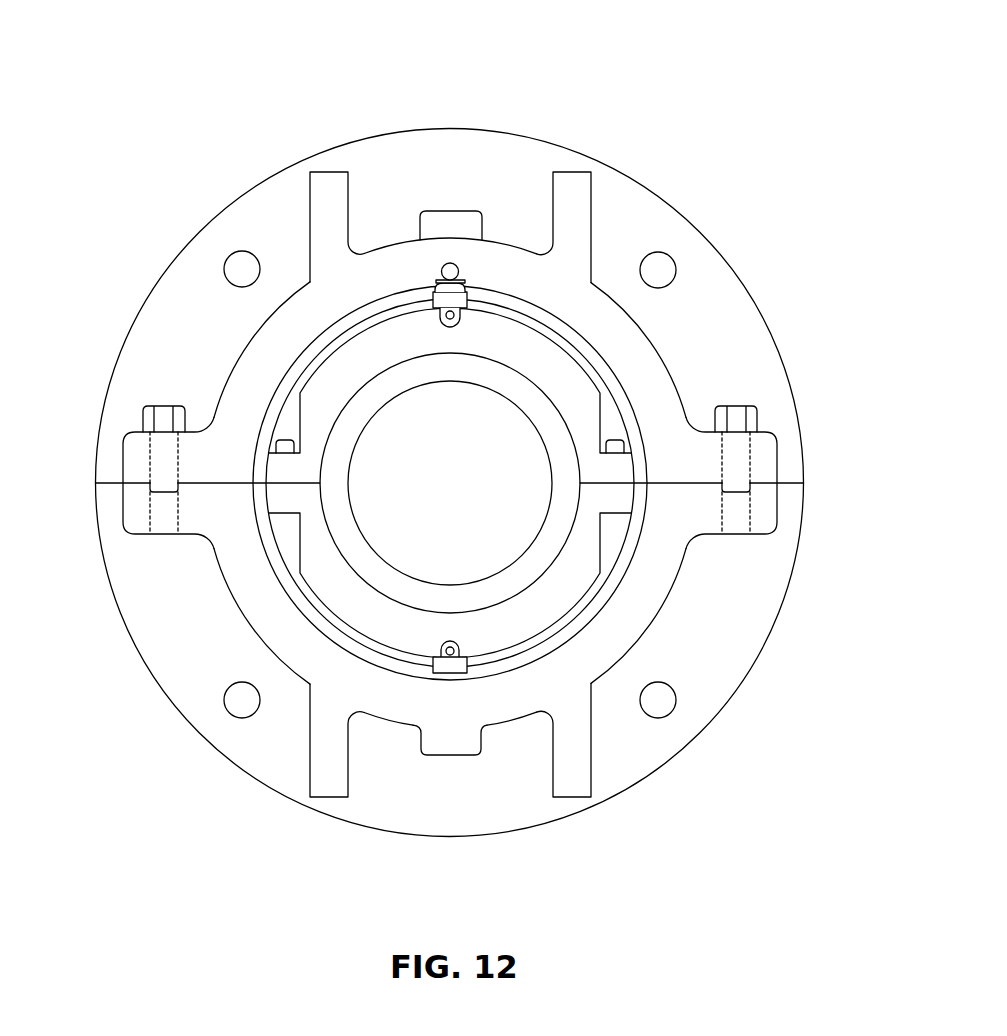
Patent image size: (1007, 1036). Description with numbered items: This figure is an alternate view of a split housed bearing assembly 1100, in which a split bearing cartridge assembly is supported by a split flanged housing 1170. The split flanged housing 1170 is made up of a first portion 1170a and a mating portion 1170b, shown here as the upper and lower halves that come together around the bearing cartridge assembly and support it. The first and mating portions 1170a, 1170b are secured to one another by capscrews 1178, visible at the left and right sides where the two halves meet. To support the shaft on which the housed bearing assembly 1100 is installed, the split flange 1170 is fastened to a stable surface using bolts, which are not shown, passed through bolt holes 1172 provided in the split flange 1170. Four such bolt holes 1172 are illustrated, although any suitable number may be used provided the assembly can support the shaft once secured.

The split housed bearing assembly 1100 is at (492, 429).
The split flanged housing 1170 is at (525, 482).
The first portion 1170a is at (715, 283).
The mating portion 1170b is at (497, 660).
The bolt holes 1172 is at (236, 259).
The capscrews 1178 is at (150, 411).